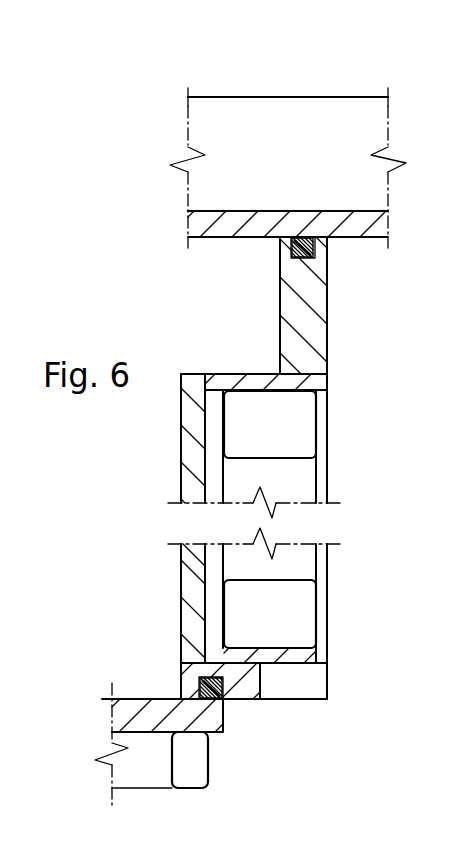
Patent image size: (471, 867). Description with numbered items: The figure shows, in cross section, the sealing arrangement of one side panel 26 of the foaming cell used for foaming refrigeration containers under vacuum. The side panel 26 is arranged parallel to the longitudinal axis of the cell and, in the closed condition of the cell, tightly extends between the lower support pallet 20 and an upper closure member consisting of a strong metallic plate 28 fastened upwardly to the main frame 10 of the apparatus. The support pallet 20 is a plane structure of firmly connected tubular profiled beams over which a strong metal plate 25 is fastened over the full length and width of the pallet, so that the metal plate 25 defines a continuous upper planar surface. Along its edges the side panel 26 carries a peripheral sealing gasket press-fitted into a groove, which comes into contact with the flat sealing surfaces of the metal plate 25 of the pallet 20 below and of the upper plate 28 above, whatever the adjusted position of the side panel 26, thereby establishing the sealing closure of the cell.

The main frame 10 is at (302, 120).
The metallic plate 28 is at (368, 230).
The side panel 26 is at (300, 479).
The metal plate 25 is at (132, 707).
The support pallet 20 is at (188, 773).